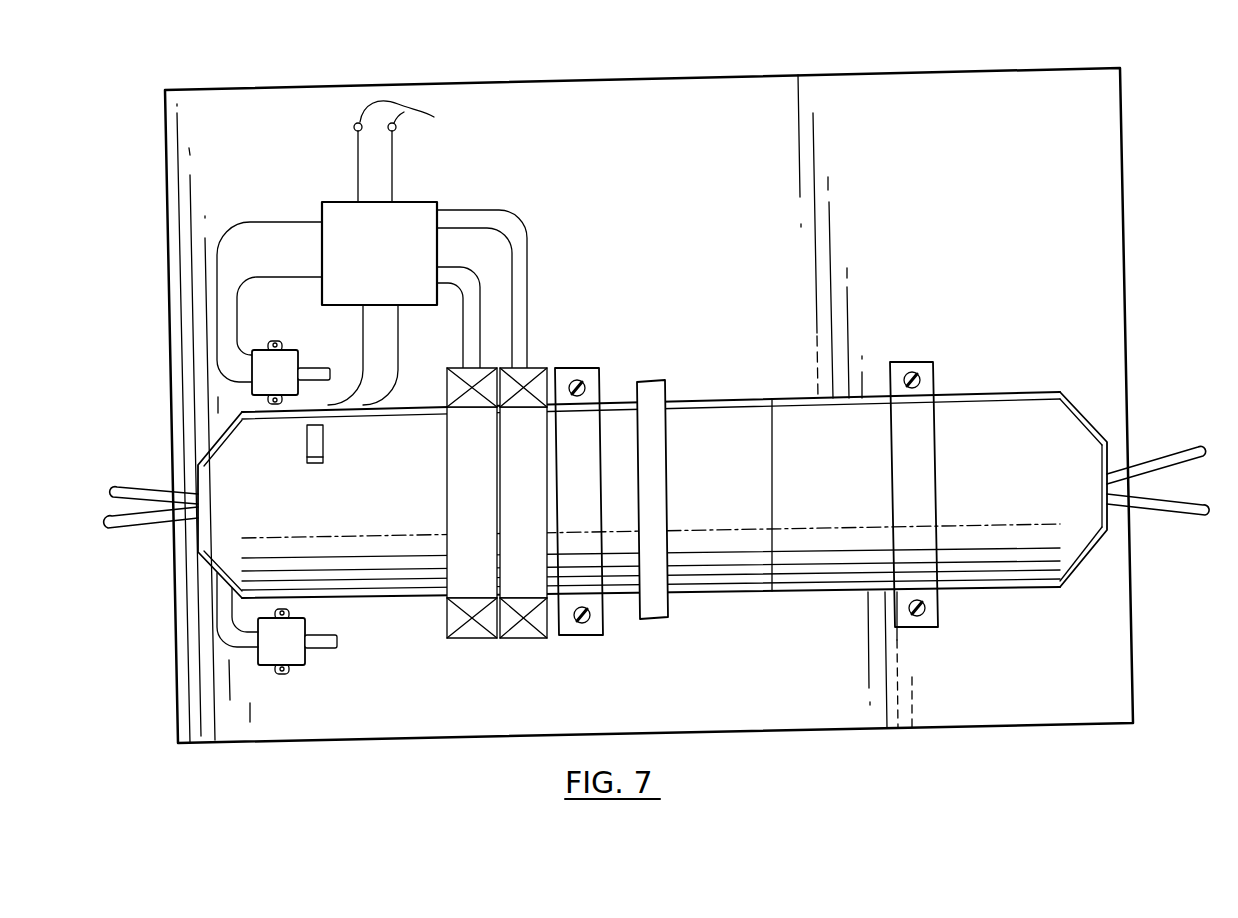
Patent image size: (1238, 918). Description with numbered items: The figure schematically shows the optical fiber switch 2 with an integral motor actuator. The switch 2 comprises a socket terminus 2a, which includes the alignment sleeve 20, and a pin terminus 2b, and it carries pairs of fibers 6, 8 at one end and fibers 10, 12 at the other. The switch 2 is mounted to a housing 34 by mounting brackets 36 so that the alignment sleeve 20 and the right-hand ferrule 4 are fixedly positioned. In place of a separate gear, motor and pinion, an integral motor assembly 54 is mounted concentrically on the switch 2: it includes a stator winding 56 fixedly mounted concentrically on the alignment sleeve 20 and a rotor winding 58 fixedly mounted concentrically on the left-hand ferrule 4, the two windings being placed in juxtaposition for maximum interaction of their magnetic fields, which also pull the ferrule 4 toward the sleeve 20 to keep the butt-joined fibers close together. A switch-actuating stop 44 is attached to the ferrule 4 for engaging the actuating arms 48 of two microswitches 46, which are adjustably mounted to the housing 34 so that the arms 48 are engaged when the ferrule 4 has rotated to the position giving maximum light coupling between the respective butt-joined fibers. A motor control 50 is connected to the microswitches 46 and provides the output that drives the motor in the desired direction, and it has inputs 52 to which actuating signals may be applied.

The switch 2 is at (695, 388).
The socket terminus 2a is at (788, 632).
The pin terminus 2b is at (363, 636).
The ferrule 4 is at (390, 600).
The fiber 6 is at (143, 487).
The fiber 8 is at (147, 526).
The fiber 10 is at (1160, 462).
The fiber 12 is at (1160, 505).
The alignment sleeve 20 is at (713, 593).
The housing 34 is at (787, 73).
The mounting bracket 36 is at (590, 635).
The switch-actuating stop 44 is at (323, 443).
The microswitch 46 is at (289, 384).
The actuating arm 48 is at (314, 366).
The motor control 50 is at (396, 294).
The input 52 is at (412, 116).
The integral motor assembly 54 is at (532, 500).
The stator winding 56 is at (528, 638).
The rotor winding 58 is at (480, 638).